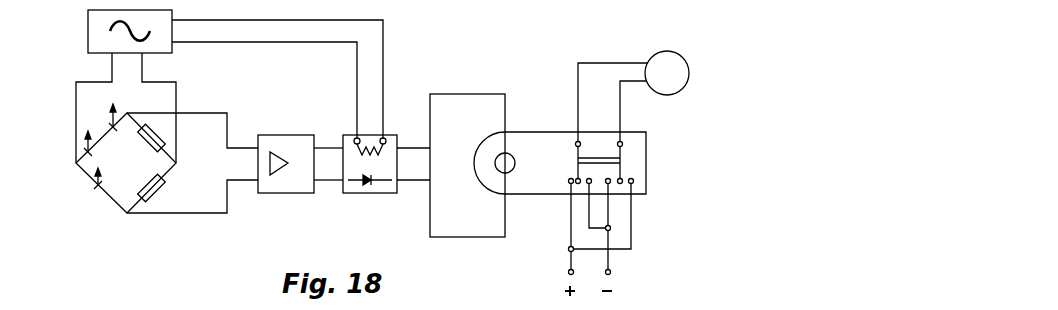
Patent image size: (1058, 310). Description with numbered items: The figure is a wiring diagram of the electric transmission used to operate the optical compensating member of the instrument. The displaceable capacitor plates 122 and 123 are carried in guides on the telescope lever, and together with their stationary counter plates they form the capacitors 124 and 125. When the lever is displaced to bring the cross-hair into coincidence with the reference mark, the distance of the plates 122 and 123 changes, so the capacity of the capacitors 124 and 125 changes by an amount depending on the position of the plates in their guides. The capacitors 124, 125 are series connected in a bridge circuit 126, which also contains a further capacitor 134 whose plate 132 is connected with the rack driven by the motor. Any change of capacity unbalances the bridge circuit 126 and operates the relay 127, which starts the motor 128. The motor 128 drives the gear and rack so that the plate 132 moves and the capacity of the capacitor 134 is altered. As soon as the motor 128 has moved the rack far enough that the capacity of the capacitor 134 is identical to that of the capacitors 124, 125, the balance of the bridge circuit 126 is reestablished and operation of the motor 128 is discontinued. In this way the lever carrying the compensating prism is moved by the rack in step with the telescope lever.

The capacitor plate 122 is at (121, 150).
The capacitor 124 is at (91, 152).
The capacitor plate 123 is at (140, 109).
The capacitor 125 is at (114, 123).
The bridge circuit 126 is at (80, 181).
The relay 127 is at (642, 175).
The motor 128 is at (675, 88).
The plate 132 is at (121, 213).
The capacitor 134 is at (100, 188).